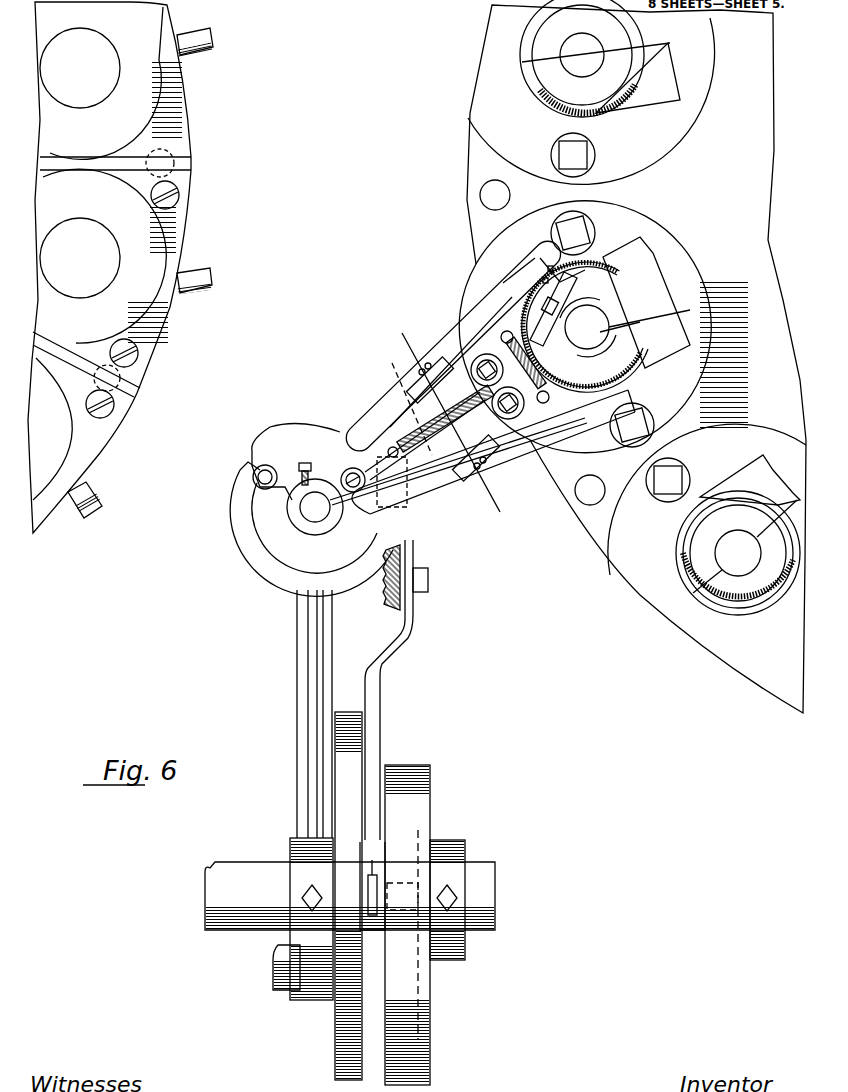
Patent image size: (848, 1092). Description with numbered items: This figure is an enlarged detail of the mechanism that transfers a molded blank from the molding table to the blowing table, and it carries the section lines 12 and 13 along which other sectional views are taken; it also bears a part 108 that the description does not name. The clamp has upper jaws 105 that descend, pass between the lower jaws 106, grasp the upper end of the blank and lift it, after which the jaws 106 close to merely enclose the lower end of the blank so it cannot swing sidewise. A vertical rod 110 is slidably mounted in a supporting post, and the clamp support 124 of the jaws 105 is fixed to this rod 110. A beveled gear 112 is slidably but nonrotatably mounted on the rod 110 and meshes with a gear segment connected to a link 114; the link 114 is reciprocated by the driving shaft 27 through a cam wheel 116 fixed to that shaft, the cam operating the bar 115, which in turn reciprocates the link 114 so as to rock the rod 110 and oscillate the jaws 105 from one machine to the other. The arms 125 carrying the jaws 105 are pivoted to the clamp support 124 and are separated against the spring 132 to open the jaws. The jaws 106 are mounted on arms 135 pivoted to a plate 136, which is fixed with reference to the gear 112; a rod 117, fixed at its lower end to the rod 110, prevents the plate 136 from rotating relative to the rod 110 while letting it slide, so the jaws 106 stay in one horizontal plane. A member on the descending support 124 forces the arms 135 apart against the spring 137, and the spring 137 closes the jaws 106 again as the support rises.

The section line 12— 12 is at (603, 404).
The section line 13— 13 is at (414, 326).
The driving shaft 27 is at (487, 890).
The clamp jaws 105 is at (562, 268).
The jaws 106 is at (570, 268).
The spring 108 is at (638, 388).
The vertical rod 110 is at (312, 507).
The beveled gear 112 is at (270, 573).
The link 114 is at (375, 670).
The bar 115 is at (420, 983).
The cam wheel 116 is at (427, 867).
The rod 117 is at (258, 477).
The clamp support 124 is at (472, 425).
The arms 125 is at (497, 330).
The spring 132 is at (560, 410).
The arms 135 is at (455, 470).
The plate 136 is at (416, 520).
The spring 137 is at (404, 357).